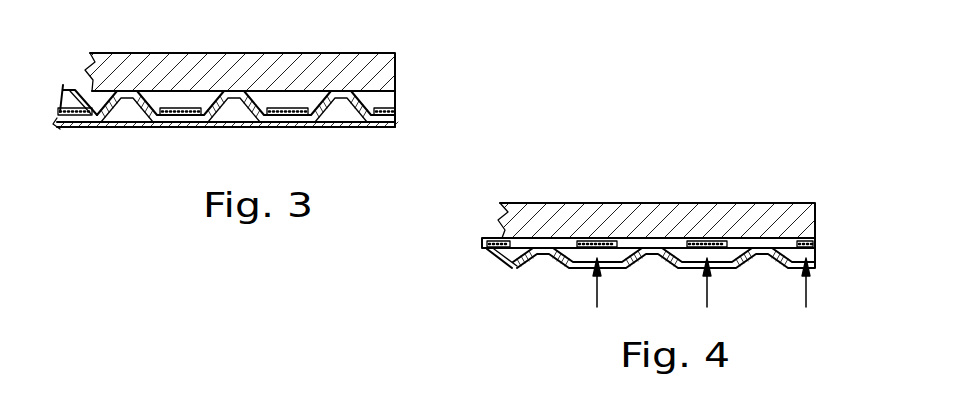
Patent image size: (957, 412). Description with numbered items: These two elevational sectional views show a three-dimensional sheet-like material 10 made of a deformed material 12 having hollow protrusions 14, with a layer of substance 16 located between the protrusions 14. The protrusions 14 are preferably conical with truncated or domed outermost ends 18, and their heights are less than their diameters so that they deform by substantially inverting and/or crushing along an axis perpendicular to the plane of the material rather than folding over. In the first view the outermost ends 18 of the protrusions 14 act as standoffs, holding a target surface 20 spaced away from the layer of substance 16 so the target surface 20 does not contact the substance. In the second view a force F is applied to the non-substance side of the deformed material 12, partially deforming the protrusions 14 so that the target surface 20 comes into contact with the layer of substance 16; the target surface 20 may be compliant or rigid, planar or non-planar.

In FIG. 3, the material 10 is at (424, 79).
In FIG. 4, the material 10 is at (842, 228).
In FIG. 3, the deformed material 12 is at (80, 128).
In FIG. 4, the deformed material 12 is at (817, 249).
In FIG. 3, the hollow protrusions 14 is at (213, 121).
In FIG. 4, the hollow protrusions 14 is at (553, 256).
In FIG. 3, the layer of substance 16 is at (287, 107).
In FIG. 4, the layer of substance 16 is at (580, 240).
In FIG. 3, the outermost ends 18 is at (174, 90).
In FIG. 4, the outermost ends 18 is at (653, 247).
In FIG. 3, the target surface 20 is at (395, 92).
In FIG. 4, the target surface 20 is at (513, 263).
In FIG. 4, the force F is at (828, 300).